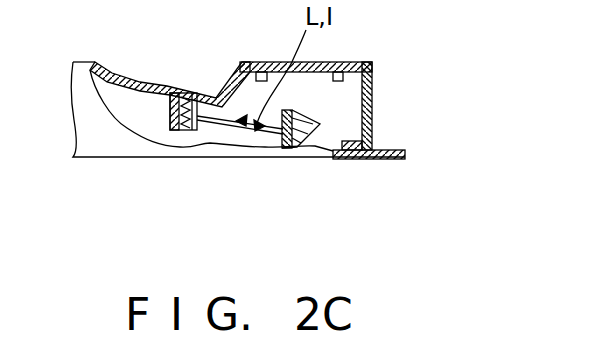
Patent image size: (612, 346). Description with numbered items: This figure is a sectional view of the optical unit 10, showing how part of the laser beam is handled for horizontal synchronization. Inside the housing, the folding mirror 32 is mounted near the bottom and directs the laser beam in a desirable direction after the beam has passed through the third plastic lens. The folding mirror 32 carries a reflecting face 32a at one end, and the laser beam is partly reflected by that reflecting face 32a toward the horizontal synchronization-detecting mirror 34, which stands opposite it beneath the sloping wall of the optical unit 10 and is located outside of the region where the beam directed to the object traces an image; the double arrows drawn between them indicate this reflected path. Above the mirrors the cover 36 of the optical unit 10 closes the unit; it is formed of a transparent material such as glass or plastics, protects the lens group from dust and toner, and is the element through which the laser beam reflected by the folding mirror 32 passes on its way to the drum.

The optical unit 10 is at (171, 83).
The cover 36 is at (318, 63).
The horizontal synchronization-detecting mirror 34 is at (203, 131).
The folding mirror 32 is at (317, 143).
The reflecting face 32a is at (277, 192).